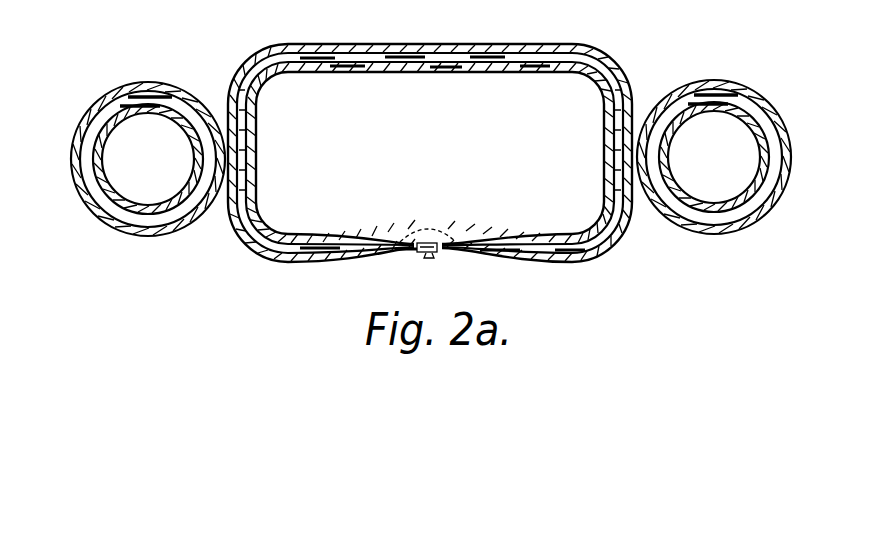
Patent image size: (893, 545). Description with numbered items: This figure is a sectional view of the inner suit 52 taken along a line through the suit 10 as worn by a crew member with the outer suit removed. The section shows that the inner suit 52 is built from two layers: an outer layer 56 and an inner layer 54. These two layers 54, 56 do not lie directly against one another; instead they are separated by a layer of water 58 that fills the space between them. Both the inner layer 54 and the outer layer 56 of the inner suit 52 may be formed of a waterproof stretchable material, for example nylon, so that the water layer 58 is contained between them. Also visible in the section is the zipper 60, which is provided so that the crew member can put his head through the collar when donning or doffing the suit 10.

The suit 10 is at (431, 153).
The inner suit 52 is at (614, 57).
The inner layer 54 is at (494, 73).
The outer layer 56 is at (489, 47).
The layer of water 58 is at (360, 46).
The zipper 60 is at (424, 259).